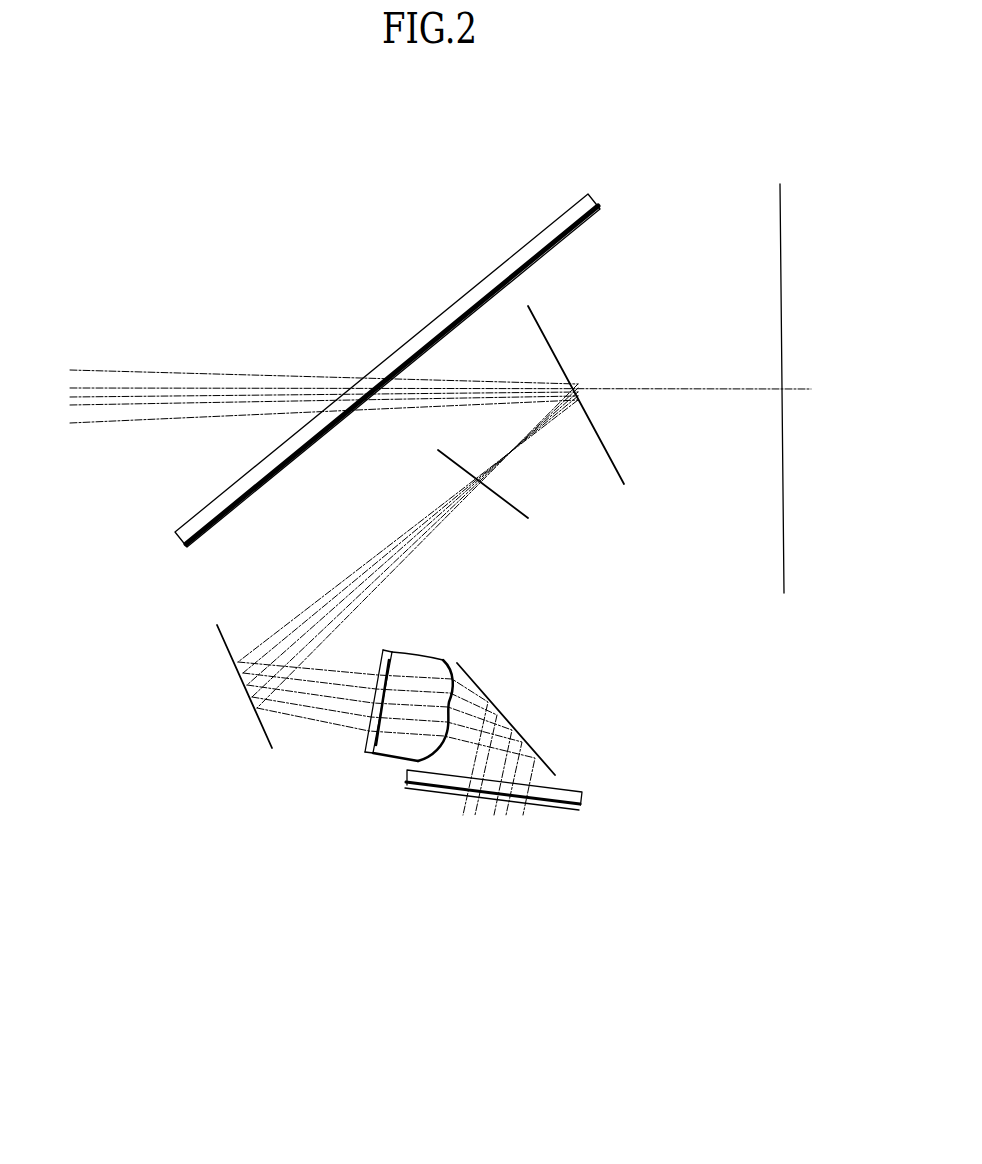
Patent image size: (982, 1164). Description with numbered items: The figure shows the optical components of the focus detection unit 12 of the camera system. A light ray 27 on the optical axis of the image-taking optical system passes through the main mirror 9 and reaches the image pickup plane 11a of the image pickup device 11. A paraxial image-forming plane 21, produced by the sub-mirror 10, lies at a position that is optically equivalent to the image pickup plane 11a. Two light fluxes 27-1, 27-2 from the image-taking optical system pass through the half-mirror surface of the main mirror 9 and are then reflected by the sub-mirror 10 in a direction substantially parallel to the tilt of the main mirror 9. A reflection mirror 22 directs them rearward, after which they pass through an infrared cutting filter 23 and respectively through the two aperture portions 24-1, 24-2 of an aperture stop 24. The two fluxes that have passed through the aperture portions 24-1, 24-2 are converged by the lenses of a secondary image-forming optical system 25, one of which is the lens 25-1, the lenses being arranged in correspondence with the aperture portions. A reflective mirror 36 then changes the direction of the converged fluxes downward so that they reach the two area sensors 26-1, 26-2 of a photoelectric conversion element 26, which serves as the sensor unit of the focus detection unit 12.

The main mirror 9 is at (557, 221).
The sub-mirror 10 is at (554, 343).
The image pickup device 11 is at (810, 412).
The image pickup plane 11a is at (781, 272).
The focus detection unit 12 is at (421, 792).
The paraxial image-forming plane 21 is at (530, 518).
The reflection mirror 22 is at (224, 636).
The infrared cutting filter 23 is at (386, 650).
The aperture stop 24 is at (305, 760).
The aperture portion 24-1 is at (380, 686).
The aperture portion 24-2 is at (378, 705).
The secondary image-forming optical system 25 is at (434, 731).
The lens 25-1 is at (446, 662).
The photoelectric conversion element 26 is at (515, 839).
The area sensor 26-1 is at (458, 801).
The area sensor 26-2 is at (520, 805).
The light ray on the optical axis 27 is at (440, 510).
The light flux 27-1 is at (163, 408).
The light flux 27-2 is at (192, 371).
The reflective mirror 36 is at (494, 703).